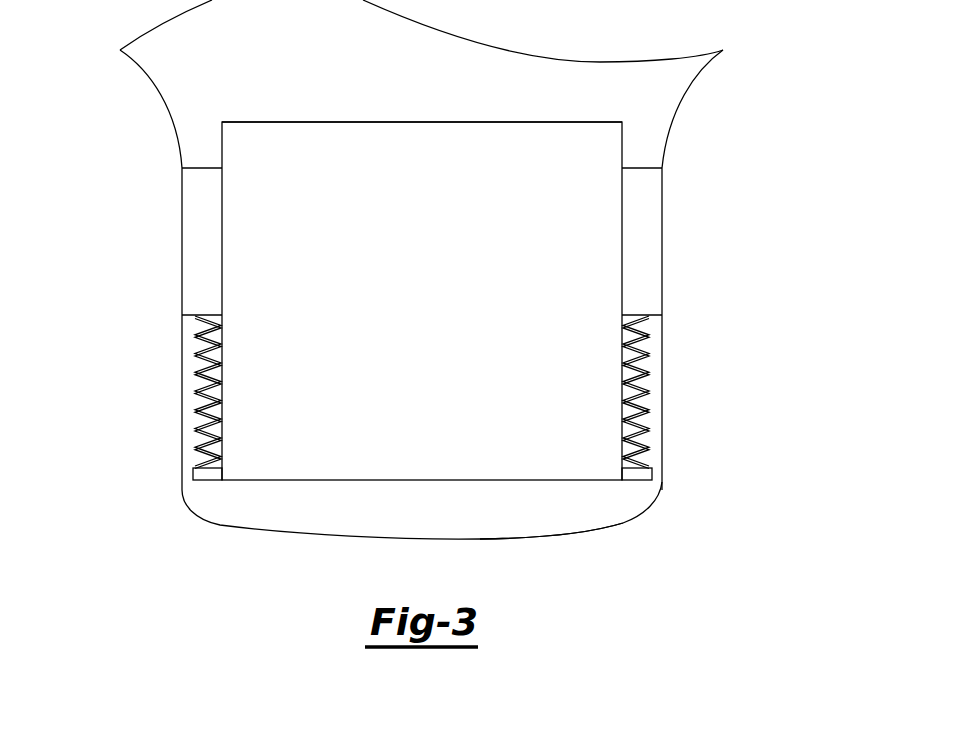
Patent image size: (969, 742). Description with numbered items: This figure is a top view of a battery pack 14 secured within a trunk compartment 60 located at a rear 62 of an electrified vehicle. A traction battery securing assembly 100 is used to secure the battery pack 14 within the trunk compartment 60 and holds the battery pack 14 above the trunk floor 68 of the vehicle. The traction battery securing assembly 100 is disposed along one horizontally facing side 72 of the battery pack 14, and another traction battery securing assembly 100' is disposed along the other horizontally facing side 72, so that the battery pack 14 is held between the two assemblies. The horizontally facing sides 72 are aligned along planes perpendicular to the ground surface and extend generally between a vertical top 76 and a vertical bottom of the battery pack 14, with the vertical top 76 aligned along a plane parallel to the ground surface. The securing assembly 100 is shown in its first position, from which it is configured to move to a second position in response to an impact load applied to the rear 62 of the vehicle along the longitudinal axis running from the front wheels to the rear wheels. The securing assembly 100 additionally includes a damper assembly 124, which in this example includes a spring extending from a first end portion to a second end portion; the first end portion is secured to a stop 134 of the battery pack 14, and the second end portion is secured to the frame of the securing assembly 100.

The battery pack 14 is at (622, 142).
The trunk compartment 60 is at (297, 105).
The vertical top 76 is at (450, 170).
The traction battery securing assembly 100 is at (147, 329).
The traction battery securing assembly 100' is at (699, 329).
The horizontally facing side 72 is at (253, 122).
The damper assembly 124 is at (182, 340).
The stop 134 is at (205, 482).
The rear 62 is at (340, 558).
The trunk floor 68 is at (550, 512).